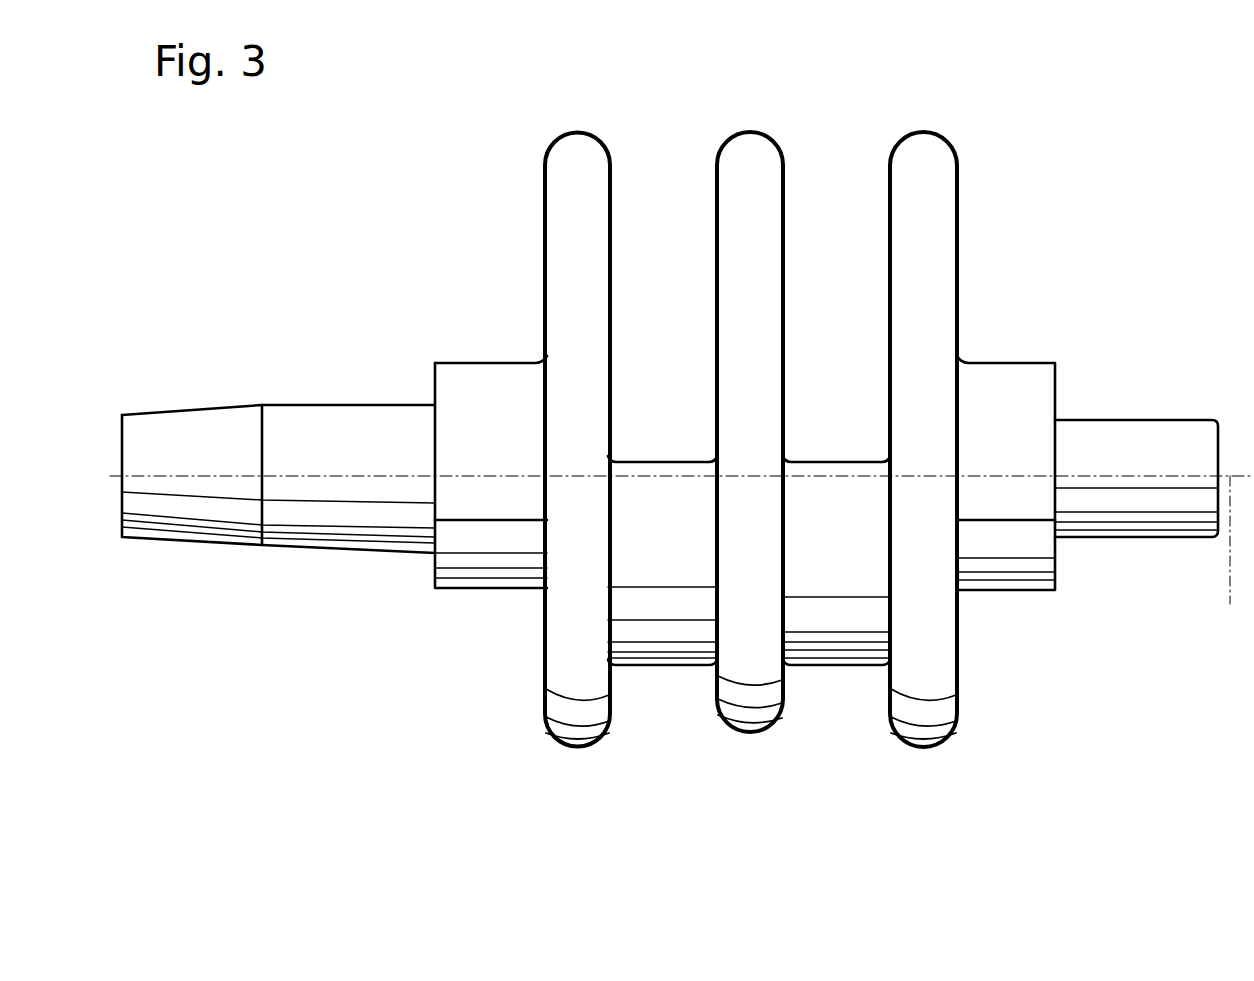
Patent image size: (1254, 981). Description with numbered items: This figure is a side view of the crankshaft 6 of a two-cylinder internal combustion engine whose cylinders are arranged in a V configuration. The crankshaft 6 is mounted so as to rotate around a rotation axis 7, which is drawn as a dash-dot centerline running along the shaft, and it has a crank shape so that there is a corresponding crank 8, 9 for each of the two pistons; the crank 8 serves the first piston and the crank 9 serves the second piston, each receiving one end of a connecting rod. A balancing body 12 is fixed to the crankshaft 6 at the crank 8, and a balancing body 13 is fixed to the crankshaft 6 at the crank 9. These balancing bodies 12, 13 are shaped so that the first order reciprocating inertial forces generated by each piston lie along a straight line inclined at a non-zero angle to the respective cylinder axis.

The crankshaft 6 is at (312, 723).
The rotation axis 7 is at (680, 553).
The crank 8 is at (650, 605).
The crank 9 is at (833, 515).
The balancing body 12 is at (571, 162).
The balancing body 13 is at (923, 172).